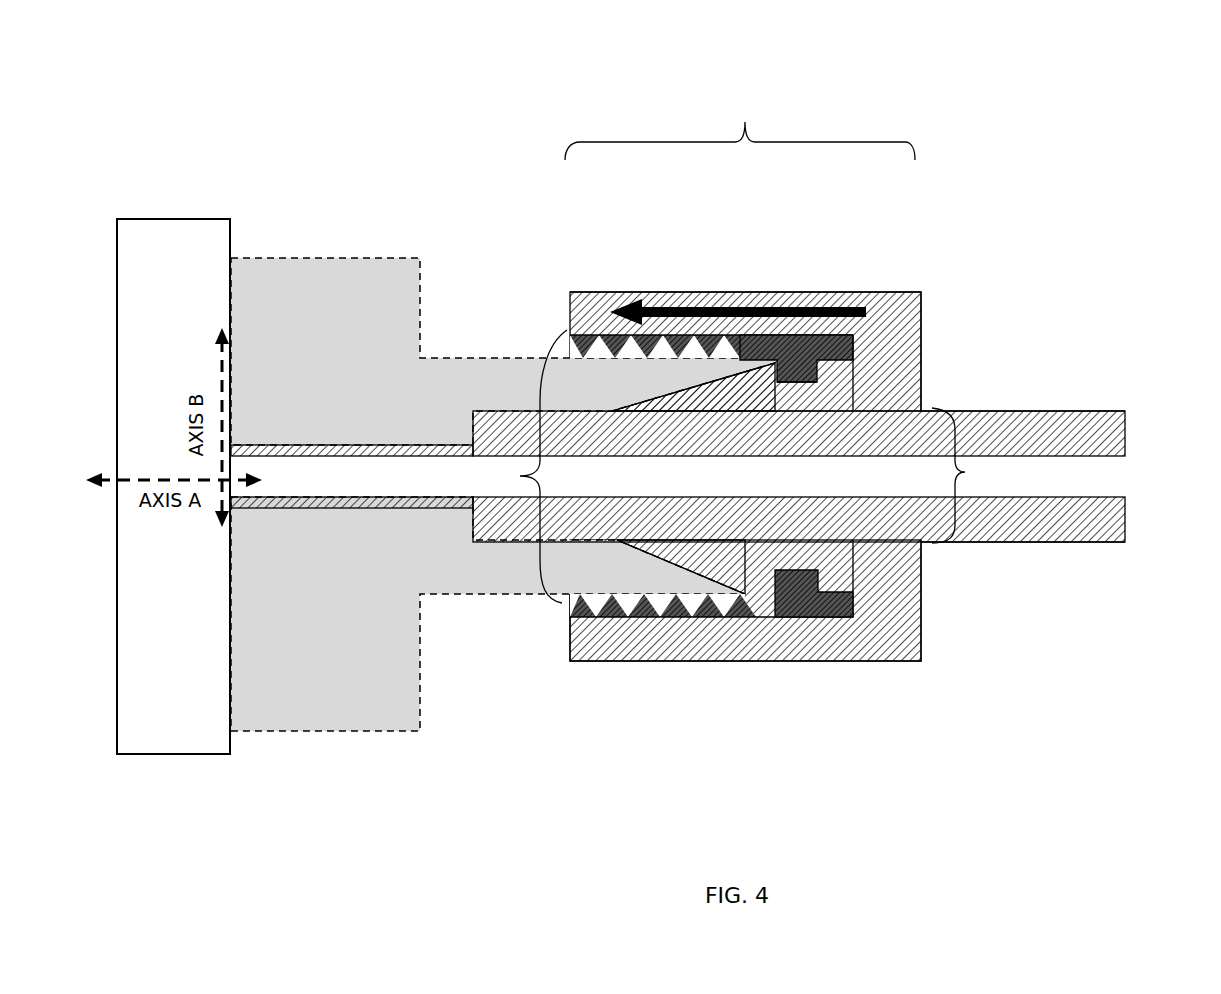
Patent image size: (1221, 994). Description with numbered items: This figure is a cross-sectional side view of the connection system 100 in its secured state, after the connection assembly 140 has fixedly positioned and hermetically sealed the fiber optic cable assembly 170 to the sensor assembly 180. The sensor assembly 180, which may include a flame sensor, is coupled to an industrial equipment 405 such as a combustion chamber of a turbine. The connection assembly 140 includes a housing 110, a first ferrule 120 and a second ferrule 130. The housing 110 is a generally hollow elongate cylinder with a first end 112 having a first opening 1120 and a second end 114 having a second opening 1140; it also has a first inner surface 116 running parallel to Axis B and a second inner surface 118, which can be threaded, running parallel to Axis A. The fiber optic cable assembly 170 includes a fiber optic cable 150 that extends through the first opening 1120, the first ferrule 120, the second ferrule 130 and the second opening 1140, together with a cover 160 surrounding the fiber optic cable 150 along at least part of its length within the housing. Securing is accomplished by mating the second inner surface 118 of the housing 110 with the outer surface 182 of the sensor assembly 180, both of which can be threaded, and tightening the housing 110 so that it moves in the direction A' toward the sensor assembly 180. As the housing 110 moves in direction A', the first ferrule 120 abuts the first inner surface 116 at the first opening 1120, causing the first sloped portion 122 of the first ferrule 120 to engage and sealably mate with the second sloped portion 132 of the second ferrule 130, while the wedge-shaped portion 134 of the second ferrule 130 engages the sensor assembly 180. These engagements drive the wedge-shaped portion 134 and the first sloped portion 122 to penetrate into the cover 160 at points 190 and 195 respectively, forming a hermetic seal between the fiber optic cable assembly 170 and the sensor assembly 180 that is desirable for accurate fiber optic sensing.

The connection system 100 is at (278, 152).
The industrial equipment 405 is at (199, 710).
The sensor assembly 180 is at (371, 625).
The outer surface 182 is at (563, 600).
The second end 114 is at (566, 320).
The first end 112 is at (929, 317).
The first ferrule 120 is at (840, 557).
The housing 110 is at (655, 288).
The direction A' is at (738, 252).
The second inner surface 118 is at (741, 335).
The first inner surface 116 is at (852, 342).
The first sloped portion 122 is at (768, 396).
The connection assembly 140 is at (740, 125).
The fiber optic cable 150 is at (1089, 477).
The fiber optic cable assembly 170 is at (1081, 399).
The cover 160 is at (1070, 521).
The first opening 1120 is at (980, 475).
The second opening 1140 is at (510, 466).
The second sloped portion 132 is at (741, 393).
The wedge-shaped portion 134 is at (640, 395).
The point 190 is at (620, 538).
The point 195 is at (734, 540).
The second ferrule 130 is at (746, 577).